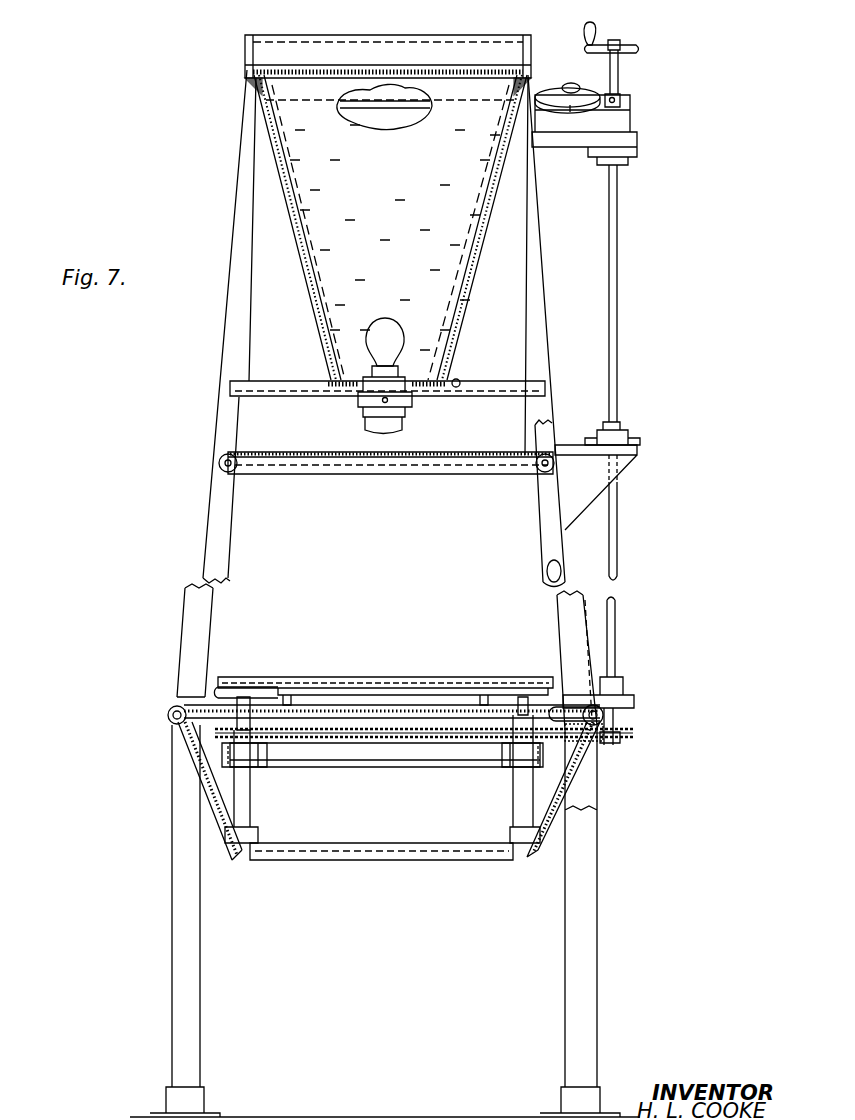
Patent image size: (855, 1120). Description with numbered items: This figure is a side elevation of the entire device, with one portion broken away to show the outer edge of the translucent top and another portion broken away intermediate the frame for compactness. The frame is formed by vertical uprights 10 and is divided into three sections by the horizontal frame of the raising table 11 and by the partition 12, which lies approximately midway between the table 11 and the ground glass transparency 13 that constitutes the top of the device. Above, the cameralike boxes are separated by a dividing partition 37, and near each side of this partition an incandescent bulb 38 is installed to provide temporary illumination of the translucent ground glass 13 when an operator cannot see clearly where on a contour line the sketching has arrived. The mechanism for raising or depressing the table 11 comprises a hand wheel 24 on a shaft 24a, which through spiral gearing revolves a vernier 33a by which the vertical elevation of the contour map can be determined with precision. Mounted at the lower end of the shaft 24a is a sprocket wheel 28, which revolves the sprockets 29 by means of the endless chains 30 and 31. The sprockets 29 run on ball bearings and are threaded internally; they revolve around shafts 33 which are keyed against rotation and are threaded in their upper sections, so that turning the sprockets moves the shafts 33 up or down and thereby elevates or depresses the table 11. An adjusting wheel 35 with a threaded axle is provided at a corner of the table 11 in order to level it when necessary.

The vertical uprights 10 is at (223, 354).
The raising table 11 is at (256, 677).
The partition 12 is at (352, 456).
The ground glass transparency 13 is at (392, 67).
The hand wheel 24 is at (640, 47).
The shaft 24a is at (620, 302).
The sprocket wheel 28 is at (632, 733).
The sprockets 29 is at (248, 752).
The endless chain 30 is at (554, 731).
The endless chain 31 is at (374, 739).
The shaft 33 is at (180, 736).
The vernier 33a is at (552, 88).
The adjusting wheel 35 is at (214, 693).
The dividing partition 37 is at (397, 126).
The incandescent bulb 38 is at (388, 328).